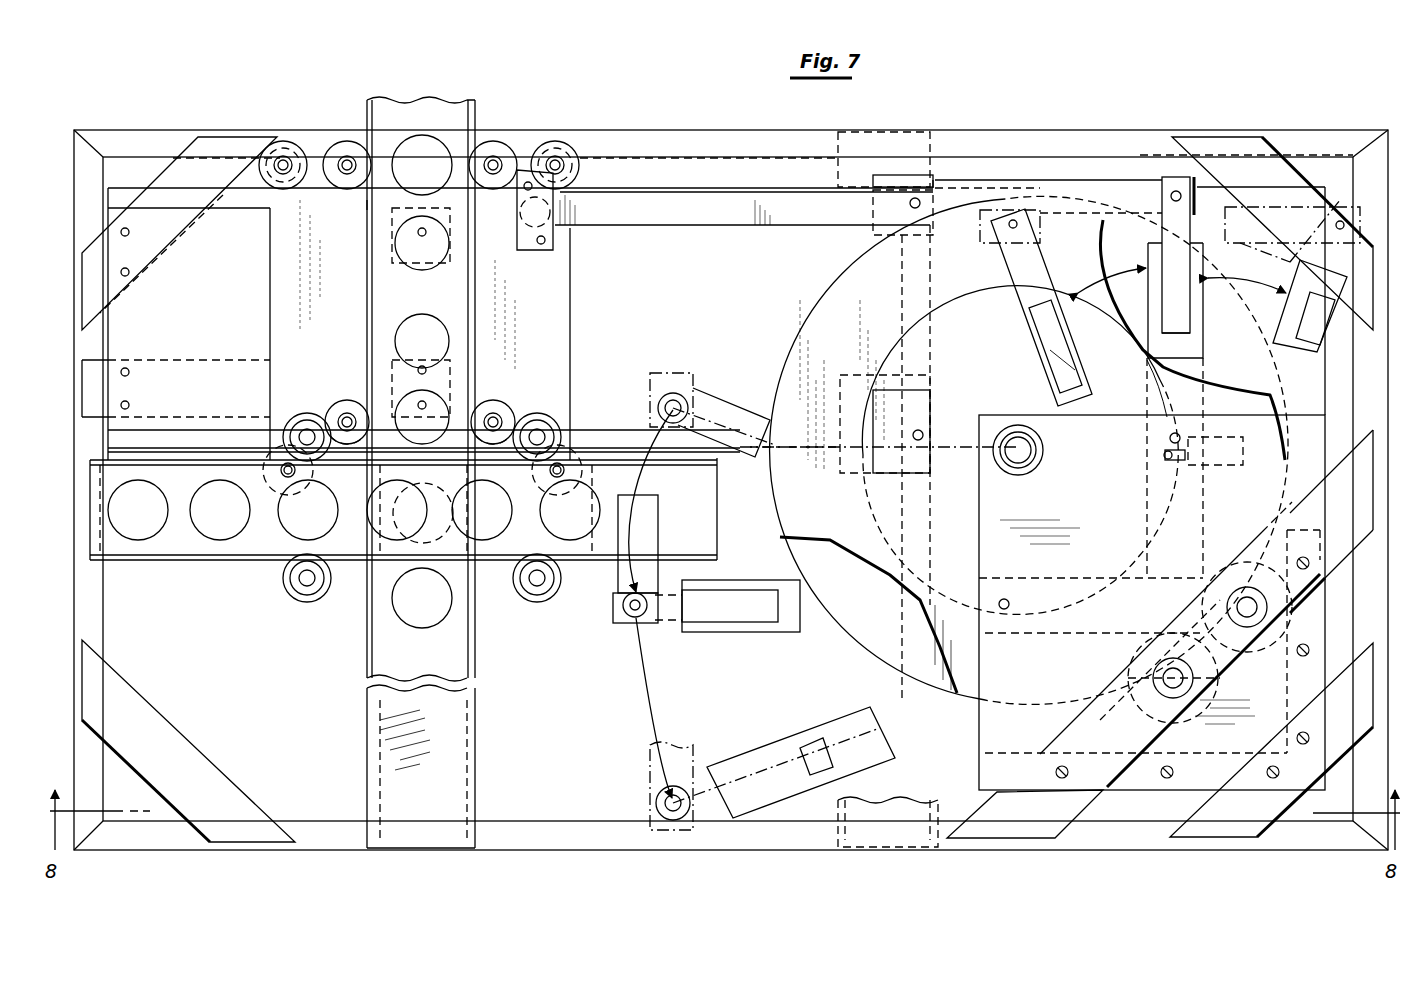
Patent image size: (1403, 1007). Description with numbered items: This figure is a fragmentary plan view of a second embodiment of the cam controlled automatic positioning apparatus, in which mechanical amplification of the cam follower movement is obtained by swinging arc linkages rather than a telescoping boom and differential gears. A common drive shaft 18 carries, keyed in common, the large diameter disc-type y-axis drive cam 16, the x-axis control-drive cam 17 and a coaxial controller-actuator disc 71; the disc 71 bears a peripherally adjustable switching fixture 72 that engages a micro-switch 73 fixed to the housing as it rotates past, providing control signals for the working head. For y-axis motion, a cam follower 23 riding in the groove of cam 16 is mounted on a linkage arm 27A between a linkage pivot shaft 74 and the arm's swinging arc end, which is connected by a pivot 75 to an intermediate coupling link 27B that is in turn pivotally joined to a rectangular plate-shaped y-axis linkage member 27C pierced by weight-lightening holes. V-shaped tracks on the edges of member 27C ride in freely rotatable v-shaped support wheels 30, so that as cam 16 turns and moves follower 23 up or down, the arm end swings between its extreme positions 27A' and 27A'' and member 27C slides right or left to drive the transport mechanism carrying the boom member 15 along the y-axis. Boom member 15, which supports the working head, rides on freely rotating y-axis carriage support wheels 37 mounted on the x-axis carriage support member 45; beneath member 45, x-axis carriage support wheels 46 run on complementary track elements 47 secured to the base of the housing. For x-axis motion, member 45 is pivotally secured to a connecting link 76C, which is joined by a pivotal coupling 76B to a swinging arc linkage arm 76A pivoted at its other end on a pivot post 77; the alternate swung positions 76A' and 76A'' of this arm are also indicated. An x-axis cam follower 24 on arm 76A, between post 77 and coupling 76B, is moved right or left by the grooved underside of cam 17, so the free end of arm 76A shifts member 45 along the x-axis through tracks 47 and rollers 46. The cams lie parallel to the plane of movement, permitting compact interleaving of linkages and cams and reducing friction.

The boom member 15 is at (472, 112).
The y-axis drive cam 16 is at (844, 273).
The x-axis control-drive cam 17 is at (930, 690).
The common drive shaft 18 is at (1018, 460).
The cam follower 23 is at (1010, 606).
The x-axis movement inducing cam follower 24 is at (1168, 438).
The linkage arm 27A is at (756, 624).
The extreme position of linkage arm 27A' is at (772, 768).
The extreme position of linkage arm 27A'' is at (712, 396).
The intermediate coupling link 27B is at (614, 615).
The y-axis linkage member 27C is at (145, 556).
The support wheels 30 is at (303, 414).
The y-axis carriage support wheels 37 is at (342, 140).
The x-axis carriage support member 45 is at (270, 268).
The x-axis carriage support wheels 46 is at (283, 141).
The track elements 47 is at (118, 205).
The controller-actuator disc 71 is at (1004, 340).
The switching fixture 72 is at (1163, 455).
The micro-switch 73 is at (1215, 462).
The linkage pivot shaft 74 is at (1247, 588).
The pivot 75 is at (620, 620).
The swinging arc linkage arm 76A is at (1177, 372).
The position of swinging arc linkage arm 76A' is at (1017, 307).
The position of swinging arc linkage arm 76A'' is at (1289, 276).
The pivotal coupling 76B is at (1172, 185).
The connecting link 76C is at (700, 225).
The pivot post 77 is at (1168, 682).